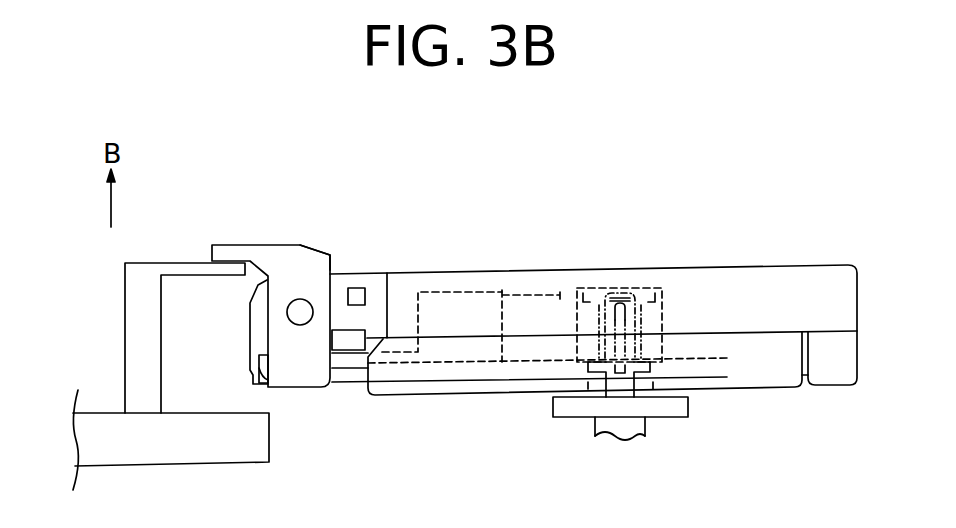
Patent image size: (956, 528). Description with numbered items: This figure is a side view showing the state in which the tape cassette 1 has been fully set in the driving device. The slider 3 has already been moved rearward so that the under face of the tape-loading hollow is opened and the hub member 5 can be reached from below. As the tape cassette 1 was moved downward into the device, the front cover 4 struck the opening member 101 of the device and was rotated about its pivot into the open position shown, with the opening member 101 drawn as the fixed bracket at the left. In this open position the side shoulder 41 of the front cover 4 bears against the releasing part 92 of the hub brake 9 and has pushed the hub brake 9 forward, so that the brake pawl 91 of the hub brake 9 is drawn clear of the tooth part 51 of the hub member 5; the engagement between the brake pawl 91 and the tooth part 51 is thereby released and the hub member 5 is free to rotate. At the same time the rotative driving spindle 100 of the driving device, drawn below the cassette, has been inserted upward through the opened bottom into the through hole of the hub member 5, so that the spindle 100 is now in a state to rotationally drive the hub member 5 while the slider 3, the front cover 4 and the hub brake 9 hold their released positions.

The tape cassette 1 is at (829, 256).
The slider 3 is at (772, 387).
The front cover 4 is at (282, 250).
The side shoulder 41 is at (305, 257).
The hub member 5 is at (655, 308).
The tooth part 51 is at (579, 290).
The hub brake 9 is at (448, 292).
The brake pawl 91 is at (523, 292).
The releasing part 92 is at (263, 385).
The rotative driving spindle 100 is at (670, 412).
The opening member 101 is at (142, 350).